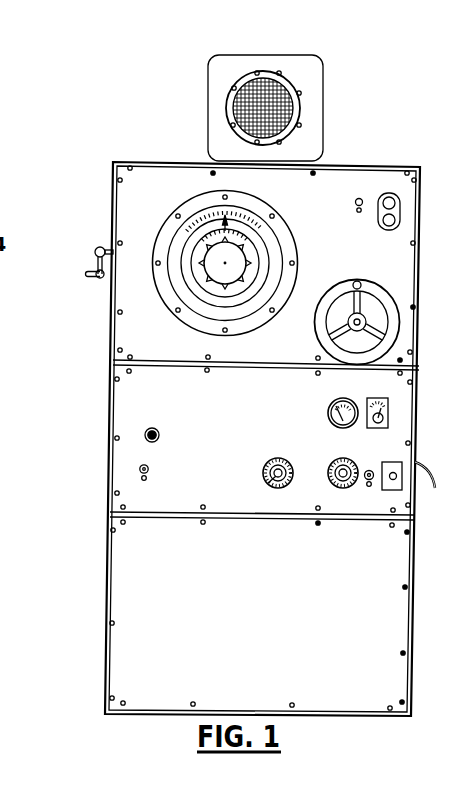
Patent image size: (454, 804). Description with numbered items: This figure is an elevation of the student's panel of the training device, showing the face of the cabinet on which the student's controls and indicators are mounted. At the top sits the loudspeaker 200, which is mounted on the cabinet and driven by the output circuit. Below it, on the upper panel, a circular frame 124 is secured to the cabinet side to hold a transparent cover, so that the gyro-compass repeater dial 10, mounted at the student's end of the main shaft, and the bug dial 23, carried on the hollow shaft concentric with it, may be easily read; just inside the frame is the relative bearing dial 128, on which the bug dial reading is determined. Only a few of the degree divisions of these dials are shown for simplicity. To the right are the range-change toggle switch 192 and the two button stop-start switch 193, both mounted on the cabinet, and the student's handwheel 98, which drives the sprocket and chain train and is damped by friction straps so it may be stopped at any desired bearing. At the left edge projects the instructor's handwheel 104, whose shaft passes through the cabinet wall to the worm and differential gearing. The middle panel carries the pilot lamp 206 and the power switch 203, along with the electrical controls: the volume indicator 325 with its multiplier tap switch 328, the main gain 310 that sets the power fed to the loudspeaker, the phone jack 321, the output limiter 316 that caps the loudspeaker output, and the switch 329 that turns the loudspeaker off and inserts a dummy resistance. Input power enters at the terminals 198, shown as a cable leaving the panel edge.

The loudspeaker 200 is at (323, 127).
The circular frame 124 is at (192, 204).
The bug dial 23 is at (245, 228).
The gyro-compass repeater dial 10 is at (252, 253).
The relative bearing dial 128 is at (237, 313).
The range-change toggle switch 192 is at (360, 199).
The two button stop-start switch 193 is at (402, 212).
The student's handwheel 98 is at (392, 298).
The handwheel 104 is at (95, 253).
The pilot lamp 206 is at (146, 432).
The switch 203 is at (139, 471).
The volume indicator 325 is at (331, 405).
The tap switch 328 is at (389, 412).
The main gain 310 is at (297, 453).
The phone jack 321 is at (388, 462).
The output limiter 316 is at (333, 486).
The switch 329 is at (372, 485).
The terminals 198 is at (420, 463).